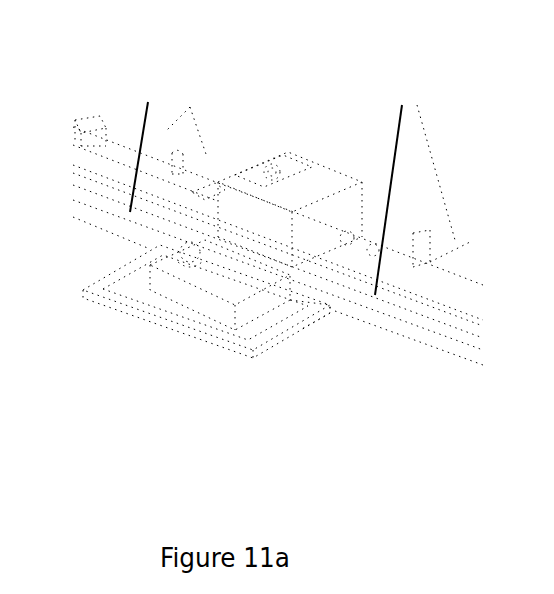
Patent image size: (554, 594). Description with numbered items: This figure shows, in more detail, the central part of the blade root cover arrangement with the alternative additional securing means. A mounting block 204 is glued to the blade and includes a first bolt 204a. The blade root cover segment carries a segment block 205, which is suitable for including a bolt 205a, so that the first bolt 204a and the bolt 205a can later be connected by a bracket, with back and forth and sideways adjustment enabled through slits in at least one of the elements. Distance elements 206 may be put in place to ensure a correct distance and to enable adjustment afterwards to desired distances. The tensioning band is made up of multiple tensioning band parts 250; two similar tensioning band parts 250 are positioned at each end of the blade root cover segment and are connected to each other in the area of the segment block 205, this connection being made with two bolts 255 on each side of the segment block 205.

The tensioning band part 250 is at (113, 167).
The segment block 205 is at (344, 167).
The bolt 205a is at (268, 165).
The bolts 255 is at (192, 192).
The mounting block 204 is at (200, 332).
The first bolt 204a is at (178, 263).
The distance elements 206 is at (313, 298).